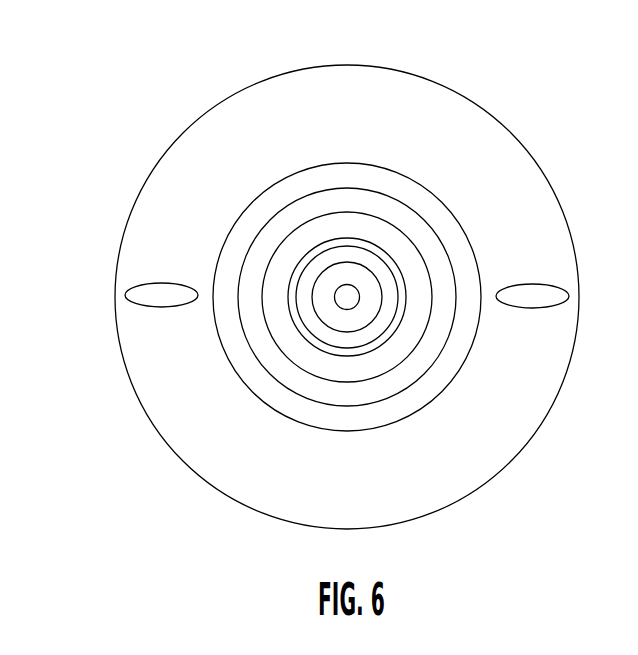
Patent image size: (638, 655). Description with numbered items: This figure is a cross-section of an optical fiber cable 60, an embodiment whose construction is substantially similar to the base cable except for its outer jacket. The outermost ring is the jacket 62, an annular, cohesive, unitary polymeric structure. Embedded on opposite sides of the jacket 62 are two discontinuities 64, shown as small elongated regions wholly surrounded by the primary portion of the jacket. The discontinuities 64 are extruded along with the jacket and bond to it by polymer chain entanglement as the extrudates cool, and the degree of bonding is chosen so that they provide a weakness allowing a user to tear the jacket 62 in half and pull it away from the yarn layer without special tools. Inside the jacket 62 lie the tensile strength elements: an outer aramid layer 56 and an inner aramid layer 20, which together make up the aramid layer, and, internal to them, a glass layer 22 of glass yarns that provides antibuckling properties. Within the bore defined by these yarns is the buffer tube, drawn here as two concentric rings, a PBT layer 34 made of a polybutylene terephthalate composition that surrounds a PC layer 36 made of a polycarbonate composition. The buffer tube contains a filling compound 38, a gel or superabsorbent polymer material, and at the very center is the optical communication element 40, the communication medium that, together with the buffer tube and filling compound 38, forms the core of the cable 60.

The cable 60 is at (314, 279).
The jacket 62 is at (137, 213).
The discontinuities 64 is at (158, 287).
The outer aramid layer 56 is at (265, 207).
The inner aramid layer 20 is at (325, 198).
The glass layer 22 is at (397, 238).
The PBT layer 34 is at (405, 282).
The PC layer 36 is at (392, 317).
The filling compound 38 is at (347, 325).
The optical communication element 40 is at (343, 300).